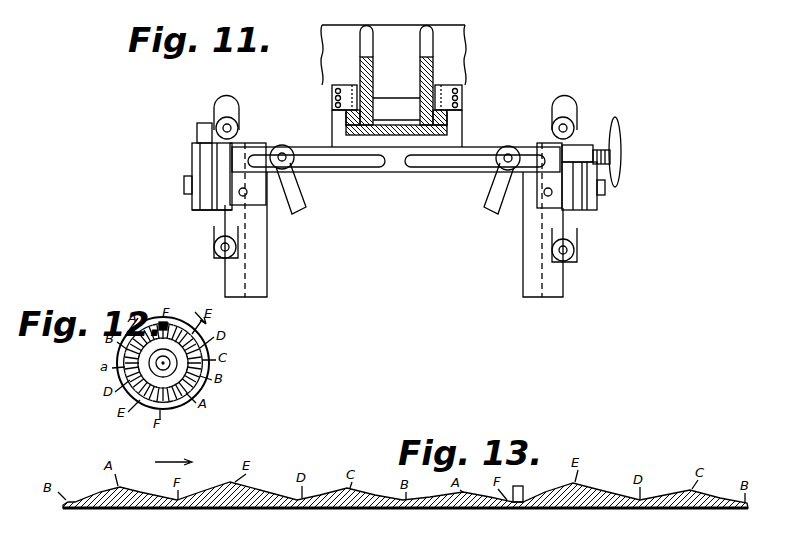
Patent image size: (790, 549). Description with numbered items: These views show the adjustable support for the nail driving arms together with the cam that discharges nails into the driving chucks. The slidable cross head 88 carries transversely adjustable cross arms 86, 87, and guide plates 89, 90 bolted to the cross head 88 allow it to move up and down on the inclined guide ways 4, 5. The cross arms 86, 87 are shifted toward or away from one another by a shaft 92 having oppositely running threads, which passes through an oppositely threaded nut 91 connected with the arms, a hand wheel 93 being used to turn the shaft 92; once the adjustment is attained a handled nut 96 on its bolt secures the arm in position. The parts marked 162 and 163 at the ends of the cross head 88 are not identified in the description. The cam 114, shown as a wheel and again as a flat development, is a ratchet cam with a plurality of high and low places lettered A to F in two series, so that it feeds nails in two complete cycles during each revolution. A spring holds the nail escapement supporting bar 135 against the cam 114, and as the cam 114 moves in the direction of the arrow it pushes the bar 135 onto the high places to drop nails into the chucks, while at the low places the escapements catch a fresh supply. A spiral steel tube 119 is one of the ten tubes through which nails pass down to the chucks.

In FIG. 11, the inclined guide way 4 is at (447, 129).
In FIG. 11, the inclined guide way 5 is at (346, 114).
In FIG. 11, the cross arm 86 is at (523, 268).
In FIG. 11, the cross arm 87 is at (267, 268).
In FIG. 11, the cross head 88 is at (313, 147).
In FIG. 11, the guide plate 89 is at (462, 92).
In FIG. 11, the guide plate 90 is at (332, 98).
In FIG. 11, the oppositely threaded nut 91 is at (300, 206).
In FIG. 11, the shaft 92 is at (192, 150).
In FIG. 11, the hand wheel 93 is at (621, 129).
In FIG. 11, the handled nut 96 is at (490, 199).
In FIG. 13, the cam 114 is at (234, 506).
In FIG. 12, the spiral steel tube 119 is at (135, 330).
In FIG. 12, the nail escapement supporting bar 135 is at (170, 326).
In FIG. 13, the nail escapement supporting bar 135 is at (525, 490).
In FIG. 11, the right clamp 162 is at (598, 205).
In FIG. 11, the left clamp screw 163 is at (200, 212).